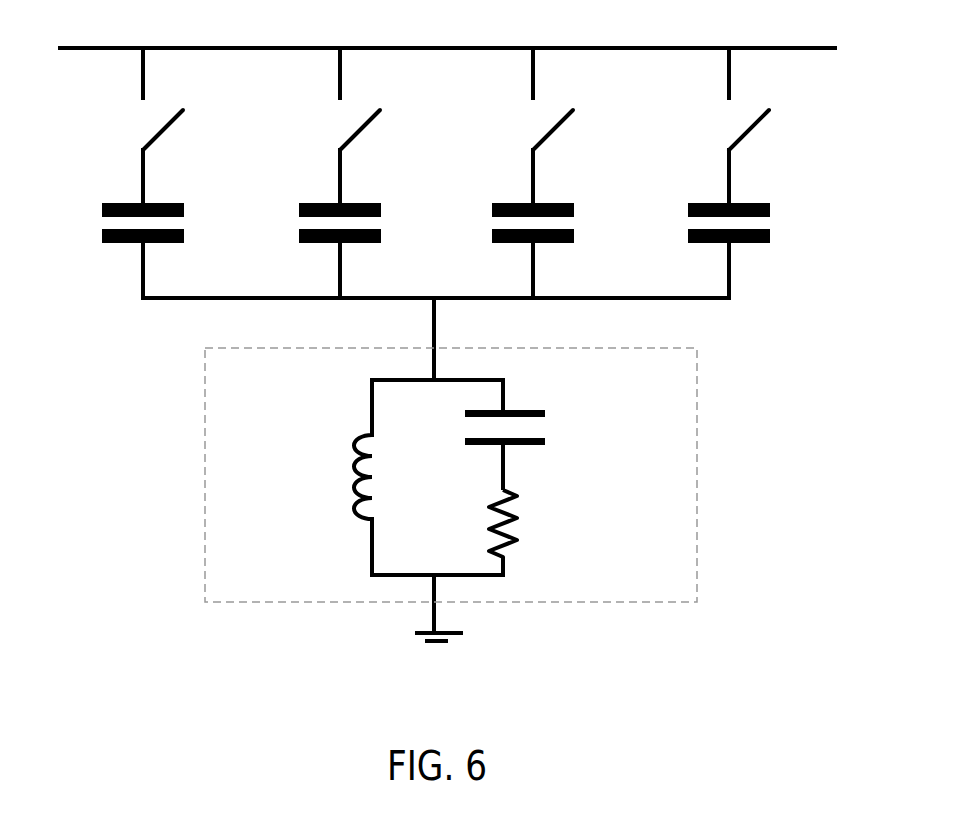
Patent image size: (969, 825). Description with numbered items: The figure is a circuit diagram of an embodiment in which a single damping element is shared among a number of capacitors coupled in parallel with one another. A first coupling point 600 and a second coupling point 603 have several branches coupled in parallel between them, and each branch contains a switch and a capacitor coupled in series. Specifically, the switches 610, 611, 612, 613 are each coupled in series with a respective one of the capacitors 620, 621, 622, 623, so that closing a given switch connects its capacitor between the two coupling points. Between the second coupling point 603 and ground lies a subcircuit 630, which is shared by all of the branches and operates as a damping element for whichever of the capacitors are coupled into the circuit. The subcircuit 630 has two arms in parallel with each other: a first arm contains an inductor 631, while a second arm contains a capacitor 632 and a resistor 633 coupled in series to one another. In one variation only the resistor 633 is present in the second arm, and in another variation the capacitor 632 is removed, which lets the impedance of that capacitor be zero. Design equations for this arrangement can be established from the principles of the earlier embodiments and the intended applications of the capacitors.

The first coupling point 600 is at (402, 47).
The second coupling point 603 is at (697, 304).
The switch 610 is at (165, 129).
The switch 611 is at (362, 129).
The switch 612 is at (555, 130).
The switch 613 is at (751, 130).
The capacitor 620 is at (122, 203).
The capacitor 621 is at (318, 203).
The capacitor 622 is at (518, 203).
The capacitor 623 is at (712, 203).
The subcircuit 630 is at (205, 514).
The inductor 631 is at (362, 518).
The capacitor 632 is at (537, 446).
The resistor 633 is at (515, 542).